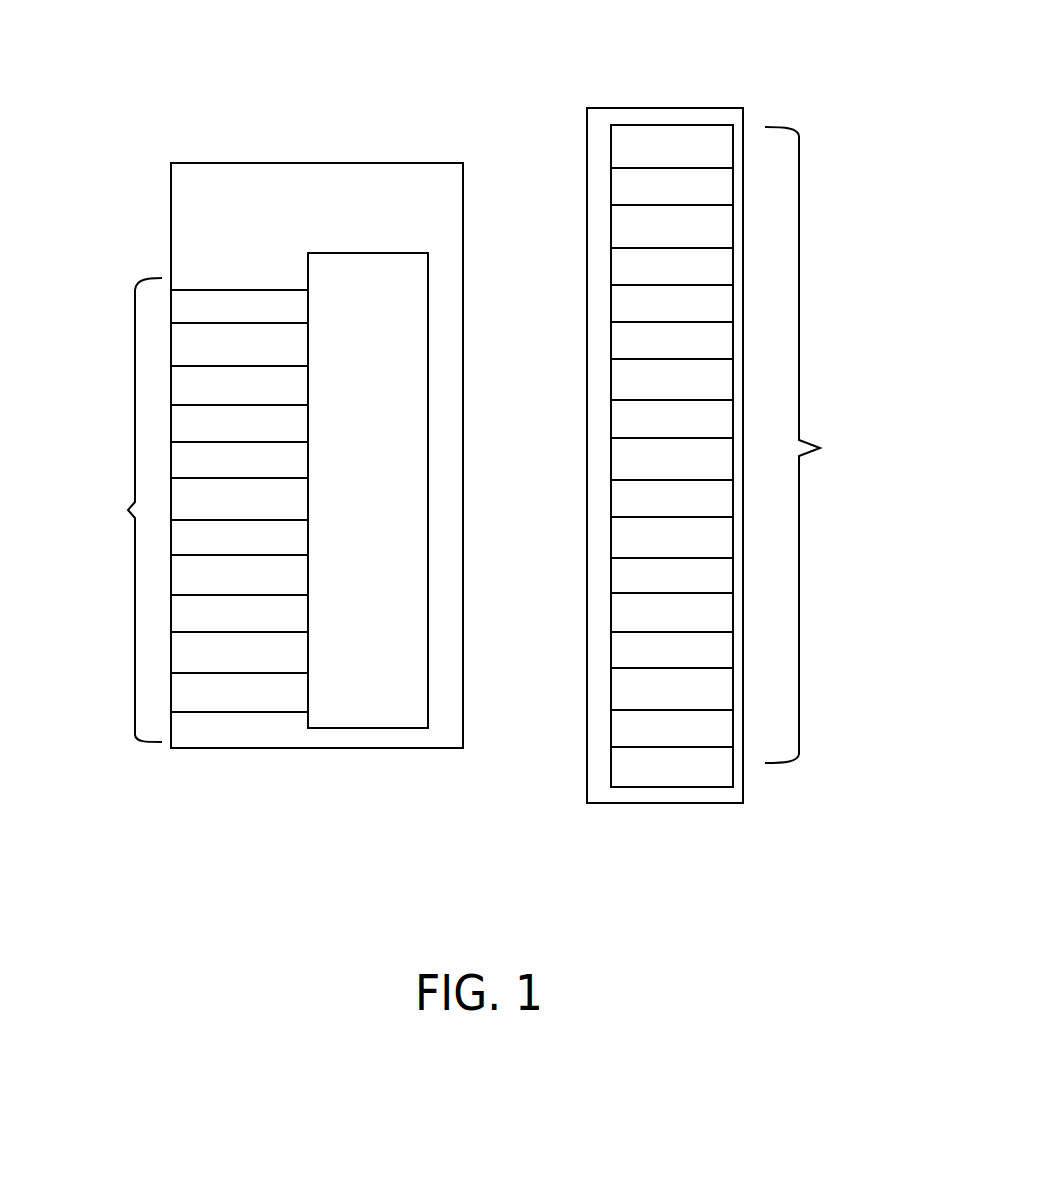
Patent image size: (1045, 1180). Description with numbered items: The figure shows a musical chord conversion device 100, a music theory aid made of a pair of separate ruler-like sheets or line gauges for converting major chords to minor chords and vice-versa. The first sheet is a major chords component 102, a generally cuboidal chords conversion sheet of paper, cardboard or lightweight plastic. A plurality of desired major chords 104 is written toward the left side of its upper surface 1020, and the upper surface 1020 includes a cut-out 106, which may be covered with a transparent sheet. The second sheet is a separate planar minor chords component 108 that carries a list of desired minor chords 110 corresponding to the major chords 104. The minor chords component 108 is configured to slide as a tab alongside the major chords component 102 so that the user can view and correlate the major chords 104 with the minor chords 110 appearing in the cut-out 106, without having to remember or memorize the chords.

The musical chord conversion device 100 is at (120, 136).
The major chords component 102 is at (182, 213).
The upper surface 1020 is at (422, 222).
The major chords 104 is at (128, 510).
The cut-out 106 is at (381, 675).
The minor chords component 108 is at (745, 115).
The minor chords 110 is at (822, 449).